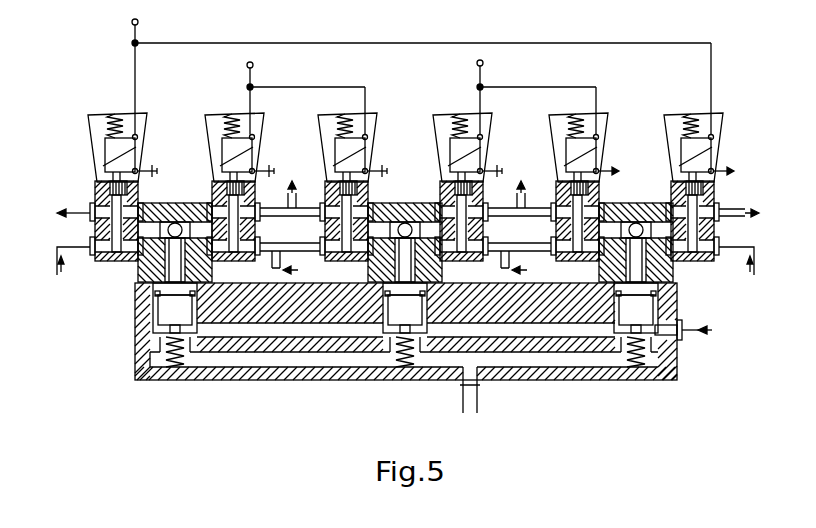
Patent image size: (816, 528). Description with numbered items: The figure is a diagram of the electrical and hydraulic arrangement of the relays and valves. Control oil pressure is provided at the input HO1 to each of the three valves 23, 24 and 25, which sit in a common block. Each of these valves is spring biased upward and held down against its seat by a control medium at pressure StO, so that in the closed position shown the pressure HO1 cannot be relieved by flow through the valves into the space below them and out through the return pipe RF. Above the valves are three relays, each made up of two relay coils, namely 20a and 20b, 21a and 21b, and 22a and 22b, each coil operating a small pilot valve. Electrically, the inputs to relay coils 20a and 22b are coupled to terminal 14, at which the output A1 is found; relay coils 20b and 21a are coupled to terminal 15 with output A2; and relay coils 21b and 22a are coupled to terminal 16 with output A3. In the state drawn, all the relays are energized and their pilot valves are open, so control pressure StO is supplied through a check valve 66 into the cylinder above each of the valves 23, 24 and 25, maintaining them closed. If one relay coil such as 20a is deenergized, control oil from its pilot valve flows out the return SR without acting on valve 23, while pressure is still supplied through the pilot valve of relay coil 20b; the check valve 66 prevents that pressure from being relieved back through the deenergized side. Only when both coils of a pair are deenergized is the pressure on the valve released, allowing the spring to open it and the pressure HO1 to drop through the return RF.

The terminal 14 is at (132, 22).
The terminal 15 is at (247, 65).
The terminal 16 is at (477, 63).
The output A1 is at (421, 73).
The output A2 is at (306, 95).
The output A3 is at (536, 94).
The relay coil 20a is at (140, 148).
The relay coil 20b is at (257, 148).
The relay coil 21a is at (370, 148).
The relay coil 21b is at (485, 148).
The relay coil 22a is at (601, 148).
The relay coil 22b is at (716, 148).
The check valve 66 is at (175, 222).
The valve 23 is at (163, 312).
The valve 24 is at (393, 312).
The valve 25 is at (645, 310).
The control oil pressure input HO1 is at (278, 330).
The return pipe RF is at (471, 402).
The return SR is at (407, 192).
The control medium pressure StO is at (405, 271).